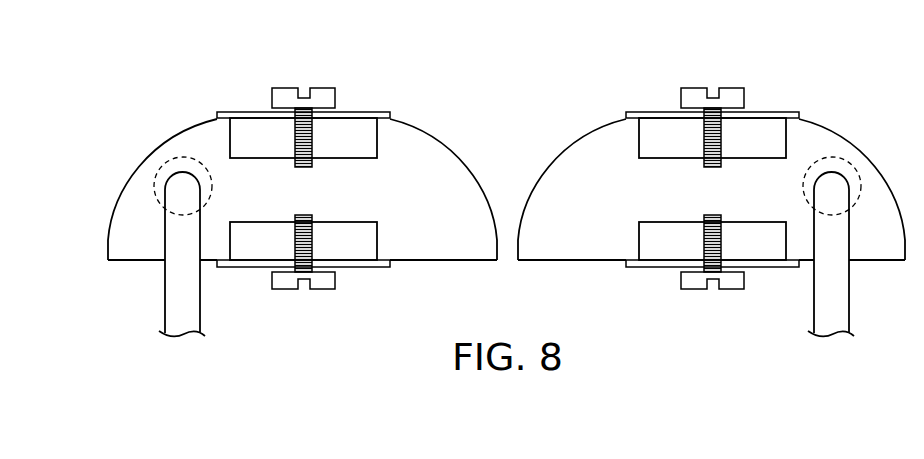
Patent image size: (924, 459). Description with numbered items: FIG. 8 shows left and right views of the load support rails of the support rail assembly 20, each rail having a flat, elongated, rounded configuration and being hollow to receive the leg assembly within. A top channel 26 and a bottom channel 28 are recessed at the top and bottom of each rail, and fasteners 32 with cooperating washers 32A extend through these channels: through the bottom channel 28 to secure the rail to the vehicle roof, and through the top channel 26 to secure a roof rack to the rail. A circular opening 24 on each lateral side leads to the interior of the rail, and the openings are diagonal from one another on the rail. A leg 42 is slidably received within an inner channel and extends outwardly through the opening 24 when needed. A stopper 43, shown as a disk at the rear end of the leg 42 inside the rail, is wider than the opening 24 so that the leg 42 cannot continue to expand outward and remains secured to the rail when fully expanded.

The support rail assembly 20 is at (449, 140).
The opening 24 is at (163, 187).
The top channel 26 is at (350, 145).
The bottom channel 28 is at (255, 238).
The fastener 32 is at (297, 92).
The washer 32A is at (257, 110).
The leg 42 is at (182, 305).
The stopper 43 is at (178, 162).